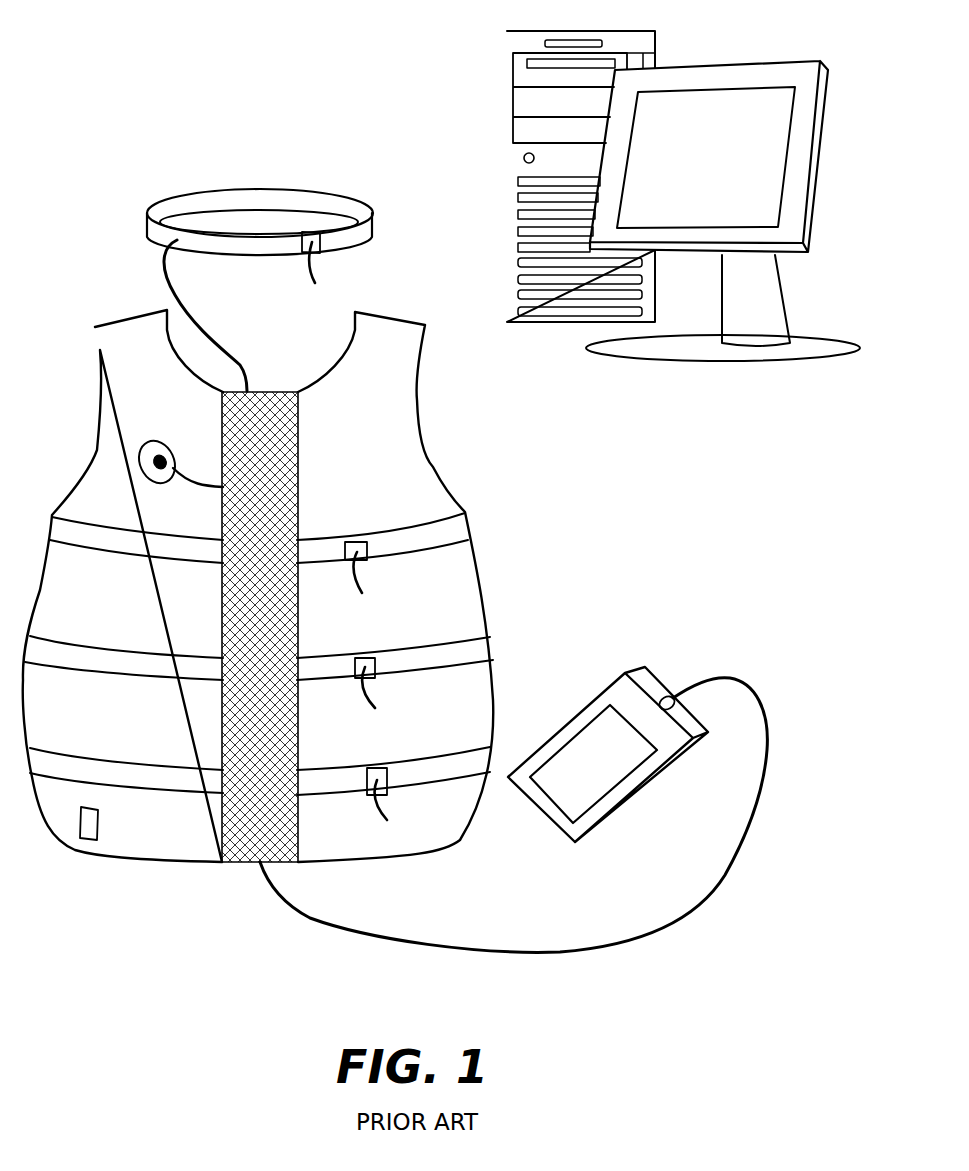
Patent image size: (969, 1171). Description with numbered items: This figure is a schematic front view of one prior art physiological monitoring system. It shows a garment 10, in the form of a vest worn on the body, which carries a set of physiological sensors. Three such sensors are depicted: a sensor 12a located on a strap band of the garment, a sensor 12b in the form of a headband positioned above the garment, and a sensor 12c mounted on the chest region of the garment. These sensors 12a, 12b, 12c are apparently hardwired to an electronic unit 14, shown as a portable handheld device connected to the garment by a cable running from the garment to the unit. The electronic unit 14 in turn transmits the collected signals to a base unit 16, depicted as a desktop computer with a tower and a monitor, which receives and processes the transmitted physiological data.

The garment 10 is at (271, 512).
The sensor 12a is at (139, 553).
The sensor 12b is at (187, 194).
The sensor 12c is at (150, 443).
The electronic unit 14 is at (597, 699).
The base unit 16 is at (655, 42).